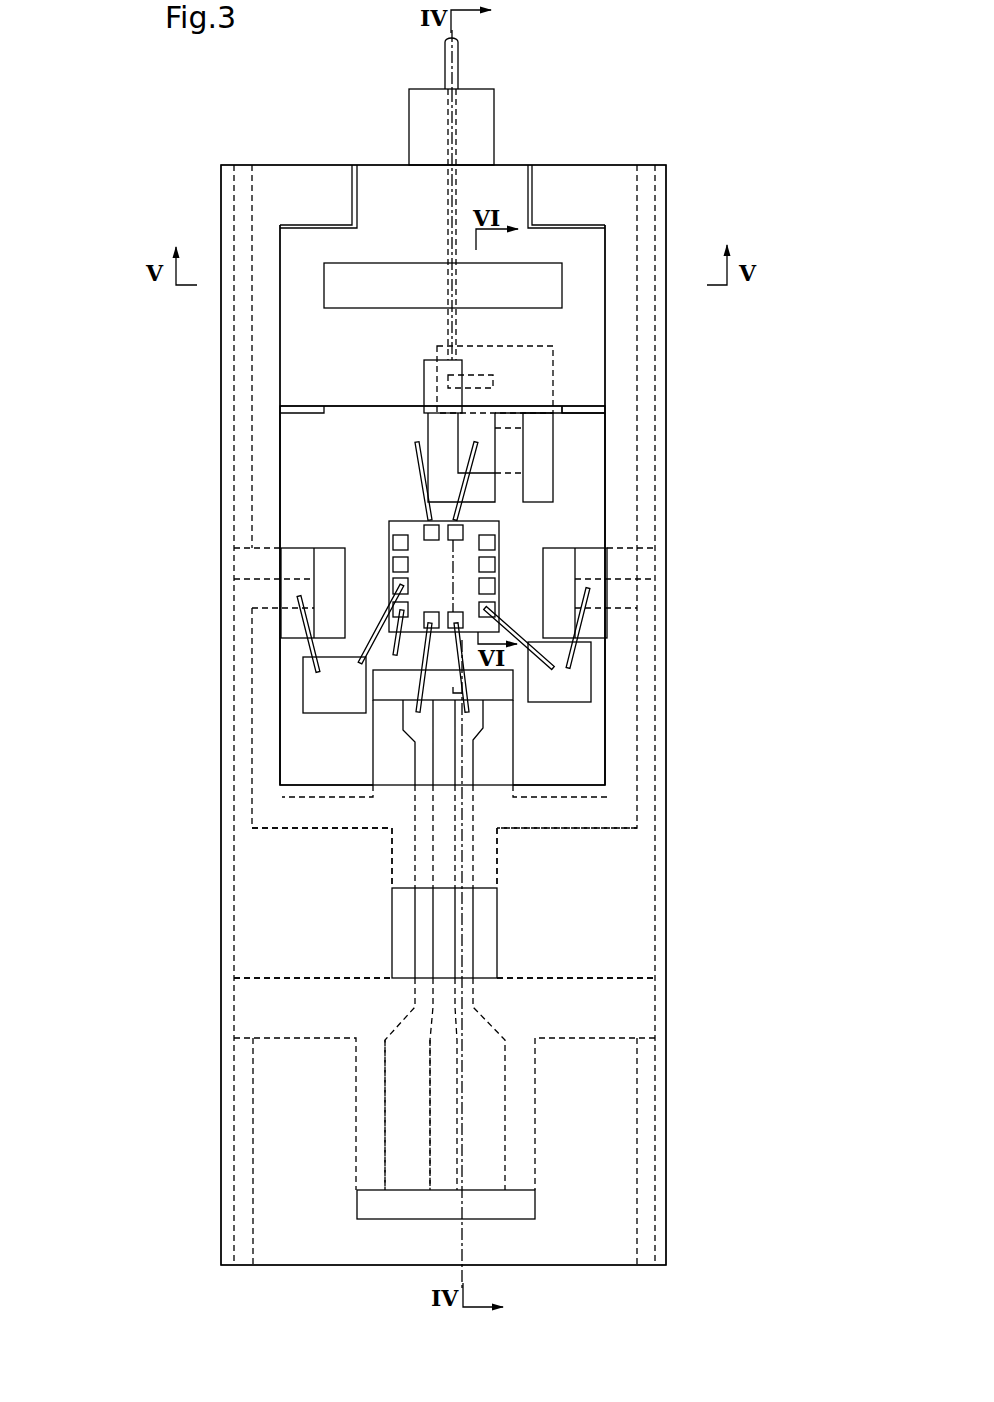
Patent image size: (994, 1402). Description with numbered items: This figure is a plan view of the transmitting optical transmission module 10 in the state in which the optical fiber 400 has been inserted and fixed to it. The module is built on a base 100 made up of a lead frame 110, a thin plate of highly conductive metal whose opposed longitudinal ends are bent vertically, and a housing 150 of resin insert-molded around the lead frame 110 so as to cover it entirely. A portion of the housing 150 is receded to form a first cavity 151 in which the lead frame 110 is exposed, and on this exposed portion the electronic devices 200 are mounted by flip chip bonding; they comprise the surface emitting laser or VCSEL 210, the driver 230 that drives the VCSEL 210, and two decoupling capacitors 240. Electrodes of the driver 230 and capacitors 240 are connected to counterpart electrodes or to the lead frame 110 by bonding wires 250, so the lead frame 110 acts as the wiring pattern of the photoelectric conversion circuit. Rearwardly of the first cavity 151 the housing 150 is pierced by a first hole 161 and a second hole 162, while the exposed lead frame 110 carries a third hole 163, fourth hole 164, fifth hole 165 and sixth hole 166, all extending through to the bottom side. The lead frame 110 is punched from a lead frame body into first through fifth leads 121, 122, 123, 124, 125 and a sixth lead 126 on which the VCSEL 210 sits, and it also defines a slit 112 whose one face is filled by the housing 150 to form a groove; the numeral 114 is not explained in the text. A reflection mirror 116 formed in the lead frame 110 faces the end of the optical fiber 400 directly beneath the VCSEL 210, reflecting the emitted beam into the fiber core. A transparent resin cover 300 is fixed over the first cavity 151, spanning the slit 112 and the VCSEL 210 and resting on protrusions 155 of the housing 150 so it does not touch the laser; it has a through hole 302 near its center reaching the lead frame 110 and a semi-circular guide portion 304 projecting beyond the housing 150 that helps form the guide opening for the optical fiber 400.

The transmitting optical transmission module 10 is at (128, 131).
The base 100 is at (762, 356).
The lead frame 110 is at (643, 378).
The housing 150 is at (665, 431).
The slit 112 is at (446, 188).
The hole 114 is at (452, 224).
The reflection mirror 116 is at (479, 375).
The first lead 121 is at (605, 900).
The second lead 122 is at (325, 895).
The third lead 123 is at (283, 1135).
The fourth lead 124 is at (493, 1122).
The fifth lead 125 is at (398, 1142).
The sixth lead 126 is at (496, 395).
The first cavity 151 is at (326, 489).
The protrusions 155 is at (590, 428).
The first hole 161 is at (479, 934).
The second hole 162 is at (516, 1203).
The third hole 163 is at (378, 683).
The fourth hole 164 is at (562, 566).
The fifth hole 165 is at (329, 566).
The sixth hole 166 is at (540, 438).
The electronic devices 200 is at (547, 510).
The surface emitting laser (VCSEL) 210 is at (421, 377).
The driver 230 is at (500, 582).
The decoupling capacitor 240 is at (586, 680).
The wires 250 is at (462, 497).
The cover 300 is at (548, 238).
The through hole 302 is at (530, 284).
The guide portion 304 is at (485, 130).
The optical fiber 400 is at (459, 68).